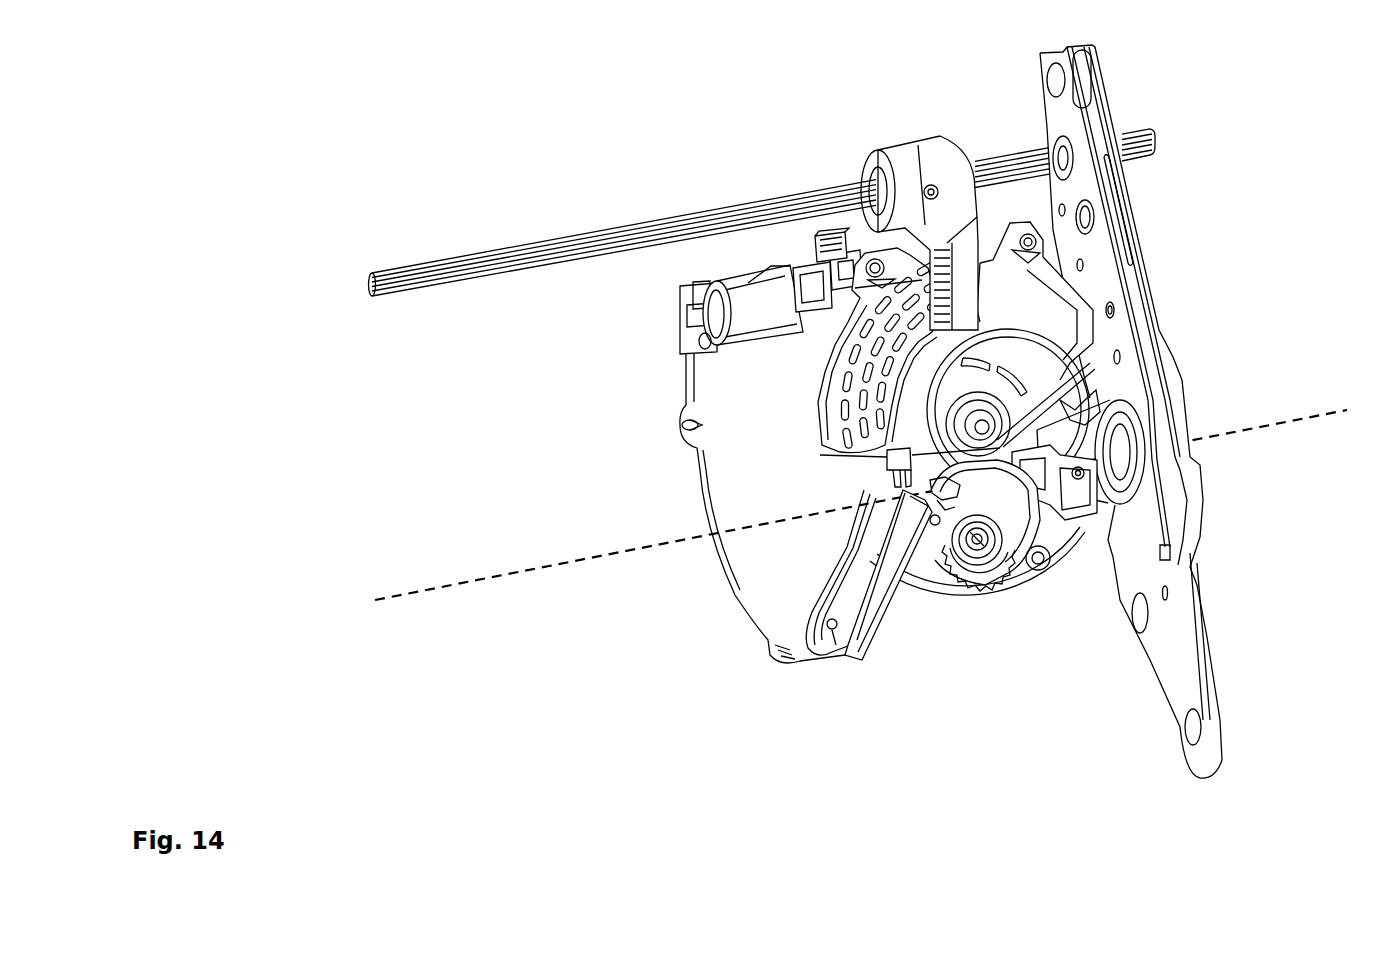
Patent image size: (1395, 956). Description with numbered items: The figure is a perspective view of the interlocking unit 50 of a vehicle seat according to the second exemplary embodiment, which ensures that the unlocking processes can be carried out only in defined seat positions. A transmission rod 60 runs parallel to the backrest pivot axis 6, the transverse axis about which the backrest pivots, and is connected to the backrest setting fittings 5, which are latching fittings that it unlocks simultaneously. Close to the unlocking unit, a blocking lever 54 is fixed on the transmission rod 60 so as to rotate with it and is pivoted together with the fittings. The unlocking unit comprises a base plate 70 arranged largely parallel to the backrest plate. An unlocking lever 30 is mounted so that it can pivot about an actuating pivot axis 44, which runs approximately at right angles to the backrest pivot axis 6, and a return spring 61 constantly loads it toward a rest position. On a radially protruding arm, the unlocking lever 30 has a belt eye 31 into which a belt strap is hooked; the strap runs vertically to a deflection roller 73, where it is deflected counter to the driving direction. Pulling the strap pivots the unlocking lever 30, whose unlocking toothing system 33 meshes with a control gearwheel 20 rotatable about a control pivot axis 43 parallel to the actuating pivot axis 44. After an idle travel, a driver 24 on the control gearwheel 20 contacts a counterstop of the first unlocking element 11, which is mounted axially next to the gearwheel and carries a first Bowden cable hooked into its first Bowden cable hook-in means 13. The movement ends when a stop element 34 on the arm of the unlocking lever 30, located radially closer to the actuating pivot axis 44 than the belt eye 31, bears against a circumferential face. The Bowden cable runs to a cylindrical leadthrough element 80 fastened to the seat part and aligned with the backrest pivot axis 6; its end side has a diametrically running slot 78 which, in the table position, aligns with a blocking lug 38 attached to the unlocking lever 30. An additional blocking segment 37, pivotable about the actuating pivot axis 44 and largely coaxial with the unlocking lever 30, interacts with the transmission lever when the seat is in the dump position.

The interlocking unit 50 is at (322, 124).
The backrest setting fitting 5 is at (1097, 268).
The backrest pivot axis 6 is at (495, 578).
The transmission rod 60 is at (470, 257).
The blocking lever 54 is at (930, 235).
The base plate 70 is at (755, 398).
The deflection roller 73 is at (760, 290).
The blocking segment 37 is at (893, 320).
The unlocking lever 30 is at (905, 422).
The blocking lug 38 is at (1062, 412).
The unlocking toothing system 33 is at (1030, 457).
The leadthrough element 80 is at (1120, 470).
The slot 78 is at (1077, 473).
The actuating pivot axis 44 is at (990, 432).
The first unlocking element 11 is at (1015, 512).
The control pivot axis 43 is at (977, 550).
The control gearwheel 20 is at (967, 582).
The driver 24 is at (946, 570).
The first Bowden cable hook-in means 13 is at (948, 495).
The stop element 34 is at (930, 527).
The belt eye 31 is at (832, 630).
The return spring 61 is at (890, 465).